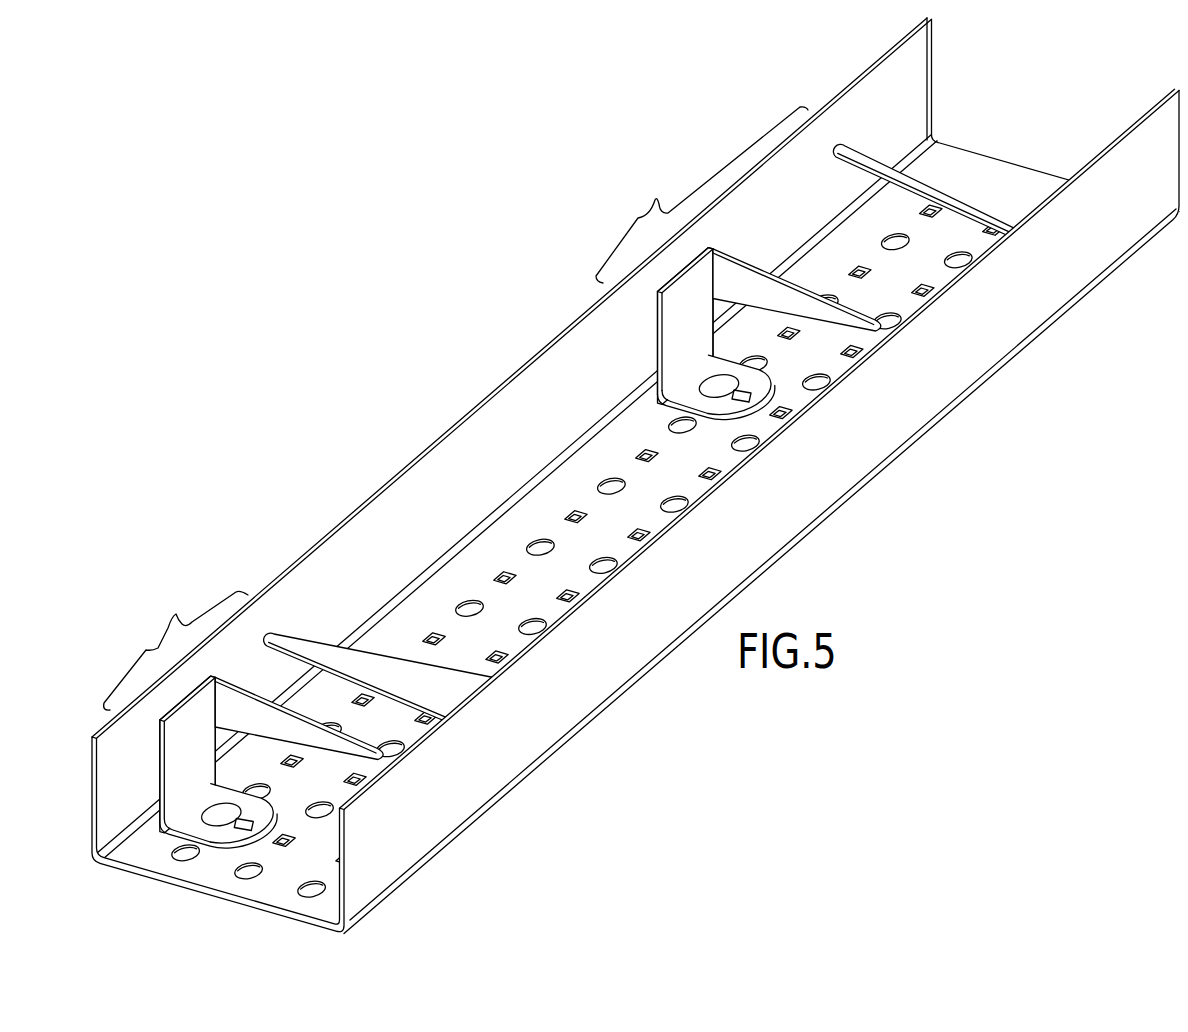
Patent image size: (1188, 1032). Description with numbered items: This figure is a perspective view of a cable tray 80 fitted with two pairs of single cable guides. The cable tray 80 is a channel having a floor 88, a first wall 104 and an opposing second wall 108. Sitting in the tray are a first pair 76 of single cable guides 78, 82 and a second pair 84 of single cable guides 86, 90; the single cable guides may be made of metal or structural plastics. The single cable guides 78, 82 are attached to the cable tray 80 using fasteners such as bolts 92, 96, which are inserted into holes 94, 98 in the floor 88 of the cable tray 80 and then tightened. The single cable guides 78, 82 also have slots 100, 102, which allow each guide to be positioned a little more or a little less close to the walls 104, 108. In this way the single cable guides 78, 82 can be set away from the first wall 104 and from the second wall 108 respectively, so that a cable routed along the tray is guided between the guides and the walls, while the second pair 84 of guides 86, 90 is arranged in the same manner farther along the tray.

The first pair of single cable guides 76 is at (176, 648).
The single cable guide 78 is at (271, 769).
The cable tray 80 is at (635, 476).
The single cable guide 82 is at (364, 661).
The second pair of single cable guides 84 is at (702, 195).
The single cable guide 86 is at (749, 334).
The floor 88 is at (559, 552).
The single cable guide 90 is at (927, 170).
The bolt 92 is at (266, 788).
The hole 94 is at (175, 851).
The bolt 96 is at (716, 384).
The hole 98 is at (607, 489).
The slot 100 is at (246, 831).
The slot 102 is at (731, 374).
The first wall 104 is at (469, 500).
The second wall 108 is at (684, 574).